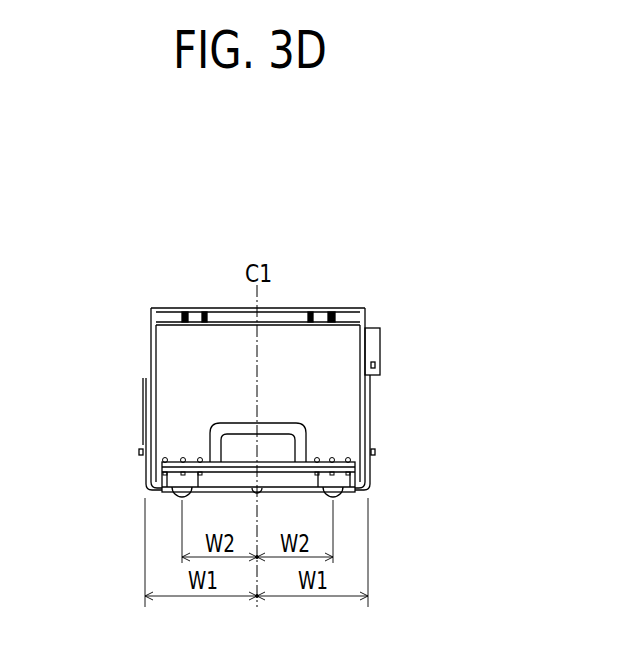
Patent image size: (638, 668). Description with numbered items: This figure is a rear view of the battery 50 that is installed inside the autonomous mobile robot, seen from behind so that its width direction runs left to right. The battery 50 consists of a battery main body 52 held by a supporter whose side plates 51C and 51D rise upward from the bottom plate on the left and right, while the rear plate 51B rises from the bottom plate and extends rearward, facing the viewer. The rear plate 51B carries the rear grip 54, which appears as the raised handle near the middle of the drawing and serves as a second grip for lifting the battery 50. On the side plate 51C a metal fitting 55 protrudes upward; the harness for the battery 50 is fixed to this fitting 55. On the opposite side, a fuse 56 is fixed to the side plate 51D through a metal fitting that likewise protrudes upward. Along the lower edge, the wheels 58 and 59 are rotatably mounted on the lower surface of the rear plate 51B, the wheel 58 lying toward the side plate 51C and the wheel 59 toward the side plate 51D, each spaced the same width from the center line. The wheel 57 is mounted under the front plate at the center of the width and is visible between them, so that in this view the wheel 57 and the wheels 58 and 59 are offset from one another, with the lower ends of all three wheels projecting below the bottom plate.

The battery 50 is at (340, 260).
The battery main body 52 is at (162, 308).
The rear grip 54 is at (232, 423).
The metal fitting 55 is at (142, 408).
The fuse 56 is at (382, 345).
The wheel 57 is at (265, 500).
The wheel 58 is at (345, 500).
The wheel 59 is at (172, 505).
The rear plate 51B is at (343, 460).
The side plate 51C is at (146, 470).
The side plate 51D is at (368, 468).